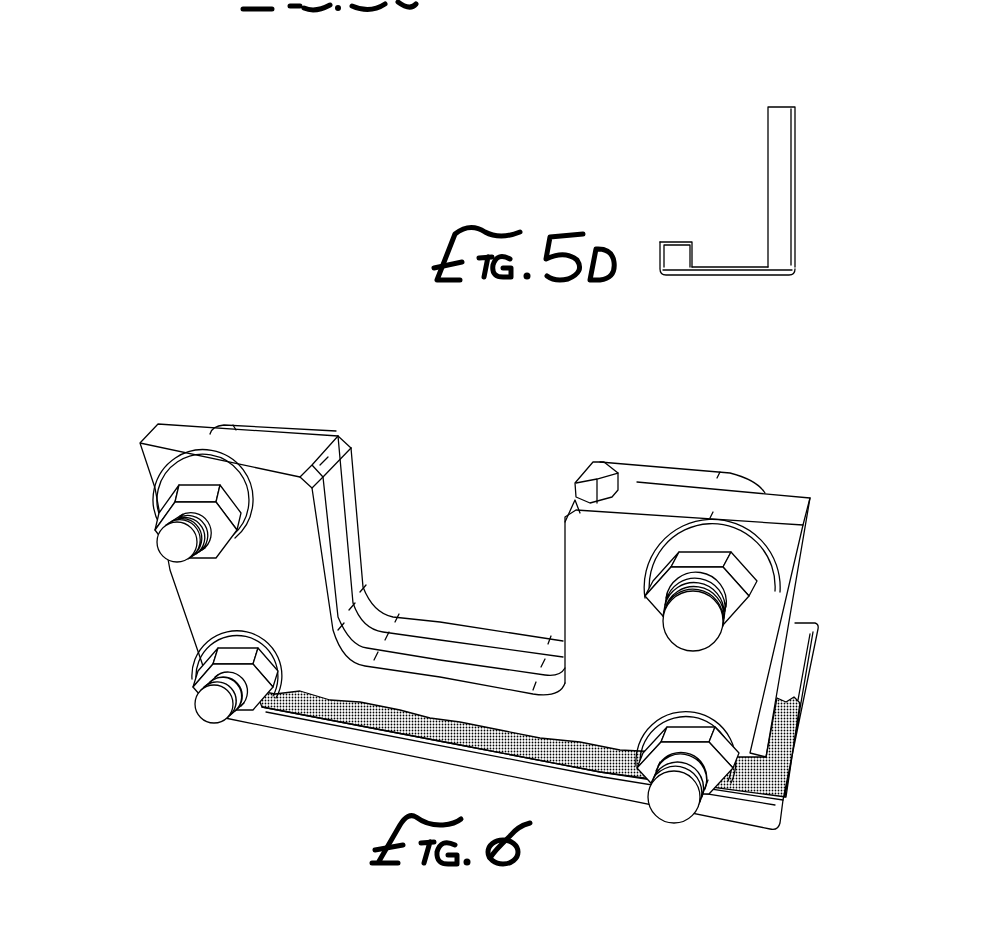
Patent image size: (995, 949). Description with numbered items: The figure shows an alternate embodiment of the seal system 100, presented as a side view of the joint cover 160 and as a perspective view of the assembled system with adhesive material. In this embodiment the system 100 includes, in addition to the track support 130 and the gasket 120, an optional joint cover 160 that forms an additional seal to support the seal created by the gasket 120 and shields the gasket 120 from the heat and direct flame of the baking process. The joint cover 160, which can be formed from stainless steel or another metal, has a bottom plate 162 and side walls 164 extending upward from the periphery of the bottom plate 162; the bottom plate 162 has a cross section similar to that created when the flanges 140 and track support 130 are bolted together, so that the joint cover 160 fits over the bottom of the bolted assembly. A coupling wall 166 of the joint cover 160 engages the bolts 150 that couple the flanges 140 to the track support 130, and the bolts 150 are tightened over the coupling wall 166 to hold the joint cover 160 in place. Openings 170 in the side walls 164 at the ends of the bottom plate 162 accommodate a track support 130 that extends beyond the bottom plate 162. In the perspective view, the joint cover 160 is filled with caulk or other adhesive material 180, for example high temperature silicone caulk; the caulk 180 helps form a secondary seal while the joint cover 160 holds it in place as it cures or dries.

In FIG. 6, the seal system 100 is at (108, 352).
In FIG. 6, the gasket 120 is at (315, 452).
In FIG. 6, the track support 130 is at (783, 507).
In FIG. 6, the flanges 140 is at (680, 475).
In FIG. 6, the bolts 150 is at (733, 613).
In FIG. 5D, the joint cover 160 is at (771, 185).
In FIG. 6, the joint cover 160 is at (818, 707).
In FIG. 5D, the bottom plate 162 is at (750, 275).
In FIG. 5D, the side walls 164 is at (680, 252).
In FIG. 5D, the coupling wall 166 is at (781, 178).
In FIG. 5D, the openings 170 is at (733, 236).
In FIG. 6, the adhesive material 180 is at (765, 773).